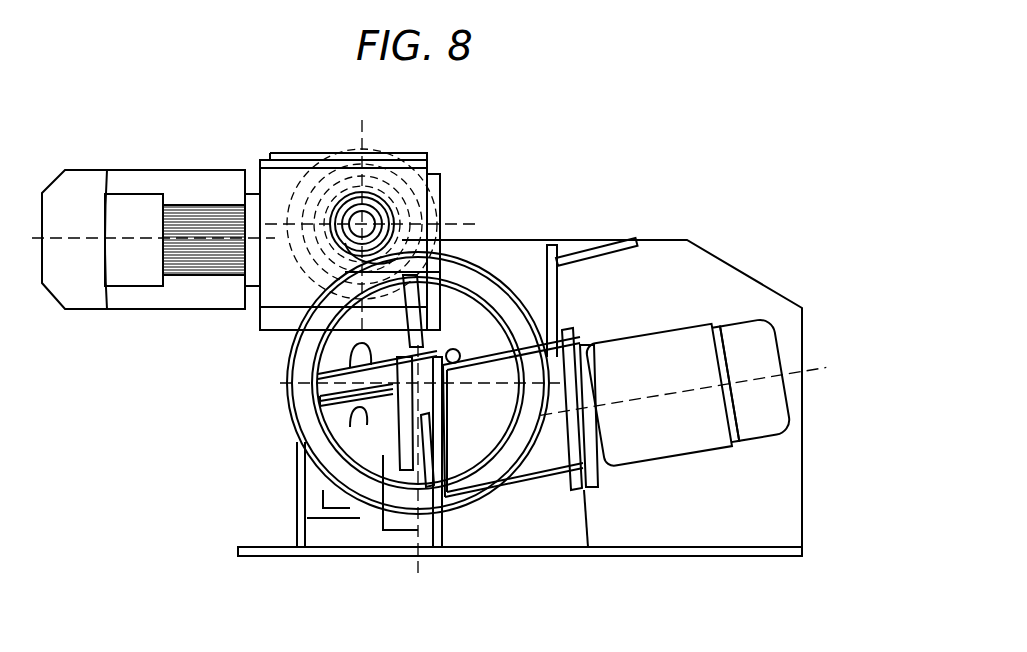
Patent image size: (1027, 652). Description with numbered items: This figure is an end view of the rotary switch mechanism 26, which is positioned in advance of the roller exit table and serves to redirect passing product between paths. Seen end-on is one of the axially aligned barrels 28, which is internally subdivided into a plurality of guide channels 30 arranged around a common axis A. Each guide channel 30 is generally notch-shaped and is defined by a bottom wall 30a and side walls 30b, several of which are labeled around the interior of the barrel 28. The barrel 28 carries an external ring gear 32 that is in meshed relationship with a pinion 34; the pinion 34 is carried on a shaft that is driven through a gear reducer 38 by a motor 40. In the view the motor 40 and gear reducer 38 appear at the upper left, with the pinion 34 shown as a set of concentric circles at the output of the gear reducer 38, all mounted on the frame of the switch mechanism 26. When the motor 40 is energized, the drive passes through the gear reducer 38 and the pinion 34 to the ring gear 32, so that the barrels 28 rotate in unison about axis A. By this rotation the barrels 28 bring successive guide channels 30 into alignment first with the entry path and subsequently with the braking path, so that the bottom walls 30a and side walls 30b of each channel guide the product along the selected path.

The rotary switch mechanism 26 is at (752, 208).
The barrel 28 is at (292, 432).
The guide channel 30 is at (490, 345).
The bottom wall 30a is at (553, 252).
The side wall 30b is at (475, 323).
The external ring gear 32 is at (300, 366).
The pinion 34 is at (397, 197).
The gear reducer 38 is at (278, 183).
The motor 40 is at (78, 180).
The common axis A is at (443, 383).